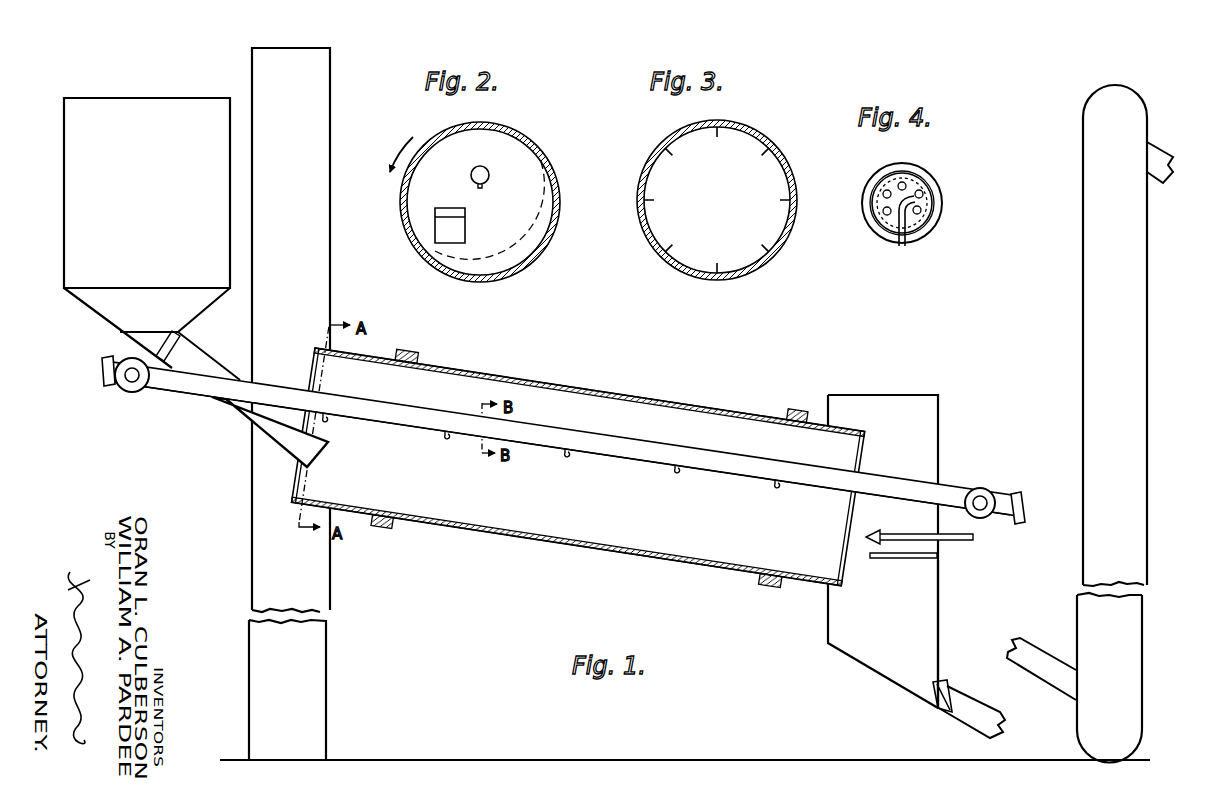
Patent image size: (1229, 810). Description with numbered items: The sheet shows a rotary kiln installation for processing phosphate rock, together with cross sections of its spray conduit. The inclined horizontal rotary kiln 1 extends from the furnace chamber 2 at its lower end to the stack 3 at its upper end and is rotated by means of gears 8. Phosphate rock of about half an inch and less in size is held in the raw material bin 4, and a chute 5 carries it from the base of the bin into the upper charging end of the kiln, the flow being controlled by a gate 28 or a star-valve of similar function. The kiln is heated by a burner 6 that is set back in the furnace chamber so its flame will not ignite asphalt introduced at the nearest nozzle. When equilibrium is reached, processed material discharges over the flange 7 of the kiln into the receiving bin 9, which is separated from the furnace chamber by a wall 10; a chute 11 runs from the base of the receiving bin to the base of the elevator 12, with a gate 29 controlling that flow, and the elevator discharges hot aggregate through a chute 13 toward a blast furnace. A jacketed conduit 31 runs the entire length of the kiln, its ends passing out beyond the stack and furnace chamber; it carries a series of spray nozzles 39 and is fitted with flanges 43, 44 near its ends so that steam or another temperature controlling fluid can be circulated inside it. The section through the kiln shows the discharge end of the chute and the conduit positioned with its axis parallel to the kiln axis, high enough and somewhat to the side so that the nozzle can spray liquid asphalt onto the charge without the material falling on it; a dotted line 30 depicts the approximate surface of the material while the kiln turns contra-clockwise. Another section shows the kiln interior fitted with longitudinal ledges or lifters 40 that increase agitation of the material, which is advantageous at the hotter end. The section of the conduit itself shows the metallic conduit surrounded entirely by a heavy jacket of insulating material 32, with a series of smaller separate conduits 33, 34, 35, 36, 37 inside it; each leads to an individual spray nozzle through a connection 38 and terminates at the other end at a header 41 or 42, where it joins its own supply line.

In FIG. 1, the horizontal rotary kiln 1 is at (648, 392).
In FIG. 2, the horizontal rotary kiln 1 is at (524, 265).
In FIG. 3, the horizontal rotary kiln 1 is at (763, 262).
In FIG. 1, the furnace chamber 2 is at (940, 421).
In FIG. 1, the stack 3 is at (305, 263).
In FIG. 1, the raw material bin 4 is at (175, 303).
In FIG. 1, the chute 5 is at (208, 362).
In FIG. 2, the chute 5 is at (460, 226).
In FIG. 1, the burner 6 is at (922, 535).
In FIG. 1, the flange 7 is at (840, 578).
In FIG. 1, the gears 8 is at (762, 587).
In FIG. 1, the receiving bin 9 is at (940, 622).
In FIG. 1, the wall 10 is at (905, 556).
In FIG. 1, the chute 11 is at (1018, 682).
In FIG. 1, the elevator 12 is at (1078, 624).
In FIG. 1, the chute 13 is at (1165, 152).
In FIG. 1, the gate 28 is at (125, 342).
In FIG. 1, the gate 29 is at (940, 712).
In FIG. 2, the dotted line 30 is at (523, 234).
In FIG. 1, the jacketed conduit 31 is at (625, 462).
In FIG. 2, the jacketed conduit 31 is at (490, 173).
In FIG. 4, the jacketed conduit 31 is at (893, 238).
In FIG. 4, the jacket of insulating material 32 is at (895, 175).
In FIG. 4, the smaller conduit 33 is at (878, 216).
In FIG. 4, the smaller conduit 34 is at (882, 190).
In FIG. 4, the smaller conduit 35 is at (906, 180).
In FIG. 4, the smaller conduit 36 is at (926, 188).
In FIG. 4, the smaller conduit 37 is at (930, 210).
In FIG. 4, the connection 38 is at (925, 226).
In FIG. 1, the spray nozzle 39 is at (775, 486).
In FIG. 2, the spray nozzle 39 is at (484, 189).
In FIG. 4, the spray nozzle 39 is at (908, 249).
In FIG. 3, the lifters 40 is at (760, 250).
In FIG. 1, the header 41 is at (102, 373).
In FIG. 1, the header 42 is at (1022, 498).
In FIG. 1, the flange 43 is at (118, 388).
In FIG. 1, the flange 44 is at (980, 488).